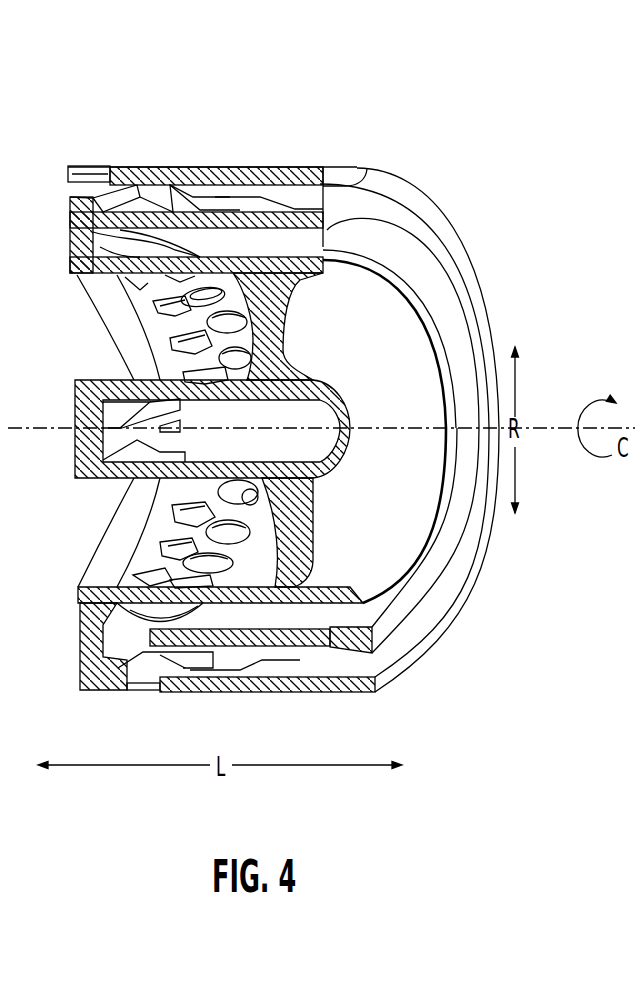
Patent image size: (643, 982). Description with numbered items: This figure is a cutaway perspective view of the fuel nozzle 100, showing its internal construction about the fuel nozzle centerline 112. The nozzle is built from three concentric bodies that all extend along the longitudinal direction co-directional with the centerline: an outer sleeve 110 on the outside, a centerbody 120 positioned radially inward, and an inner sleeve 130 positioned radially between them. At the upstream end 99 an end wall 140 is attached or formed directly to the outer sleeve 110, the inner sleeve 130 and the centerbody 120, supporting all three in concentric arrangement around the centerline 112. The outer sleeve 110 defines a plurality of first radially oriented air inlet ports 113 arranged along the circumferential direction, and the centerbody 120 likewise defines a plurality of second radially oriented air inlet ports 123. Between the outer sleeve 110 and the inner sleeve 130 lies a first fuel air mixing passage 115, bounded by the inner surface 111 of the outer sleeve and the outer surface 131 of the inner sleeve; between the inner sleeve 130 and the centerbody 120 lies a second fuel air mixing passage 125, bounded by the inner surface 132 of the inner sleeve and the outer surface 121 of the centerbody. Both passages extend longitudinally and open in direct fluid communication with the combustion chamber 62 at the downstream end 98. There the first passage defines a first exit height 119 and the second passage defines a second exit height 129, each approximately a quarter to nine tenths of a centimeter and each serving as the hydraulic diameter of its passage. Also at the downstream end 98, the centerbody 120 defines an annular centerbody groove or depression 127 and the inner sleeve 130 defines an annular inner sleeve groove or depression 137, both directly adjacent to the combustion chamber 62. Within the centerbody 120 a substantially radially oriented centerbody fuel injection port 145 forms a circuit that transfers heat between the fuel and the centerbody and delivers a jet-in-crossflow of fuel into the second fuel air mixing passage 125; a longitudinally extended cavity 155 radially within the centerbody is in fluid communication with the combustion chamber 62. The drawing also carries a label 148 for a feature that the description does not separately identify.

The combustion chamber 62 is at (590, 383).
The downstream end 98 is at (597, 213).
The upstream end 99 is at (60, 208).
The fuel nozzle 100 is at (410, 88).
The outer sleeve 110 is at (281, 158).
The inner surface of the outer sleeve 111 is at (322, 198).
The fuel nozzle centerline 112 is at (540, 428).
The first radially oriented air inlet ports 113 is at (139, 701).
The first fuel air mixing passage 115 is at (290, 203).
The first exit height 119 is at (368, 165).
The centerbody 120 is at (323, 203).
The outer surface of the centerbody 121 is at (293, 283).
The second radially oriented air inlet ports 123 is at (170, 315).
The second fuel air mixing passage 125 is at (303, 246).
The annular centerbody groove or depression 127 is at (362, 348).
The second exit height 129 is at (327, 253).
The inner sleeve 130 is at (185, 210).
The outer surface of the inner sleeve 131 is at (302, 198).
The inner surface of the inner sleeve 132 is at (324, 262).
The annular inner sleeve groove or depression 137 is at (412, 611).
The end wall 140 is at (86, 156).
The centerbody fuel injection port 145 is at (102, 404).
The tab 148 is at (185, 422).
The longitudinally extended cavity 155 is at (297, 459).